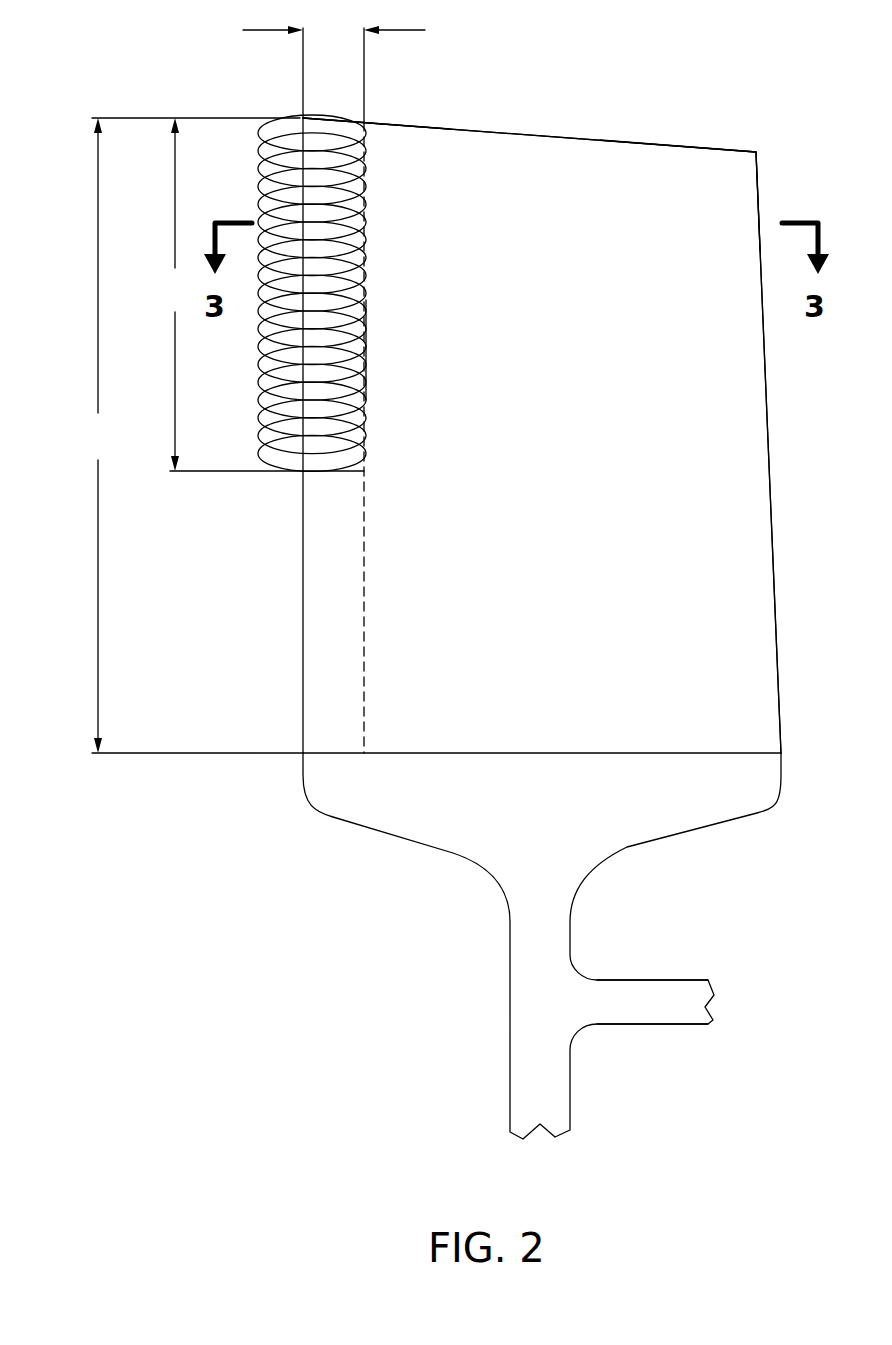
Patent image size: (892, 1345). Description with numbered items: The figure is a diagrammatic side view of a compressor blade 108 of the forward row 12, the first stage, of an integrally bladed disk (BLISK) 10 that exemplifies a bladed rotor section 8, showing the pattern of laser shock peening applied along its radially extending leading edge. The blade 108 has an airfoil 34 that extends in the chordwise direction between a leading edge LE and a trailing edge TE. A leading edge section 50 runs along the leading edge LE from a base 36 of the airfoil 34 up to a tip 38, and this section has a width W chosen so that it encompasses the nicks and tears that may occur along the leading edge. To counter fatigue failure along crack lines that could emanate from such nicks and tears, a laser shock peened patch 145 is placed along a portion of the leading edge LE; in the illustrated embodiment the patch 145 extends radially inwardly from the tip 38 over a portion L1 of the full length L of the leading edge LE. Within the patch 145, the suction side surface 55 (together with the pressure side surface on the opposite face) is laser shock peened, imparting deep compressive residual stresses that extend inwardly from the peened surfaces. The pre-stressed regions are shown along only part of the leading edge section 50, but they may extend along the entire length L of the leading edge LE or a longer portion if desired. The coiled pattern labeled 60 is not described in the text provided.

The bladed rotor section 8 is at (648, 1024).
The integrally bladed disk (BLISK) 10 is at (645, 980).
The forward row 12 is at (400, 836).
The airfoil 34 is at (752, 382).
The base 36 is at (525, 753).
The tip 38 is at (520, 130).
The leading edge section 50 is at (355, 530).
The suction side surface 55 is at (437, 162).
The coil 60 is at (300, 122).
The compressor blade 108 is at (655, 143).
The laser shock peened patch 145 is at (366, 353).
The leading edge LE is at (300, 613).
The trailing edge TE is at (770, 606).
The length of the leading edge L is at (195, 435).
The portion of the length L1 is at (262, 294).
The width W is at (334, 70).